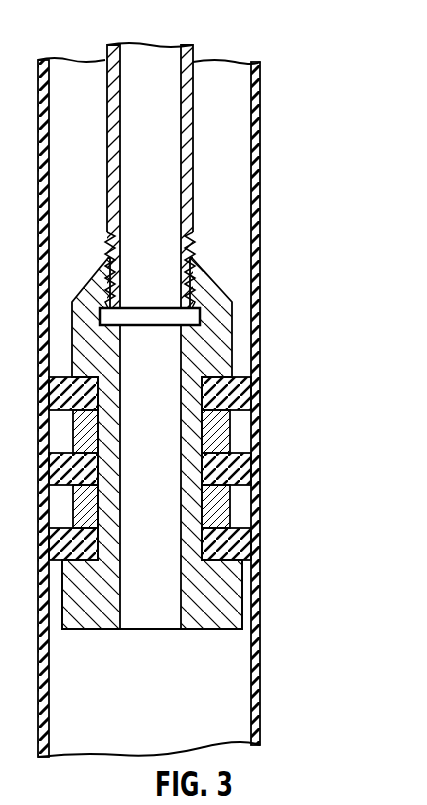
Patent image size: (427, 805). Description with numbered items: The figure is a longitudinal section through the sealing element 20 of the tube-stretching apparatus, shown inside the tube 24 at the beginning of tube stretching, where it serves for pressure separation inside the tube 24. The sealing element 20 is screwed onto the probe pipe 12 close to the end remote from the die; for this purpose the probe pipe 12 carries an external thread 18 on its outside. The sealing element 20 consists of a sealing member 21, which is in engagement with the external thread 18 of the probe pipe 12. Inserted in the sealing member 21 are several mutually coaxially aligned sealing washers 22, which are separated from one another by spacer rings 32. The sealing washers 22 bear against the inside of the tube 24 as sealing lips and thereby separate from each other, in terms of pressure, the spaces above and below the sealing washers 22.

The probe pipe 12 is at (158, 157).
The external thread 18 is at (190, 250).
The sealing element 20 is at (333, 258).
The sealing member 21 is at (217, 617).
The sealing washers 22 is at (238, 392).
The tube 24 is at (257, 270).
The spacer rings 32 is at (225, 432).